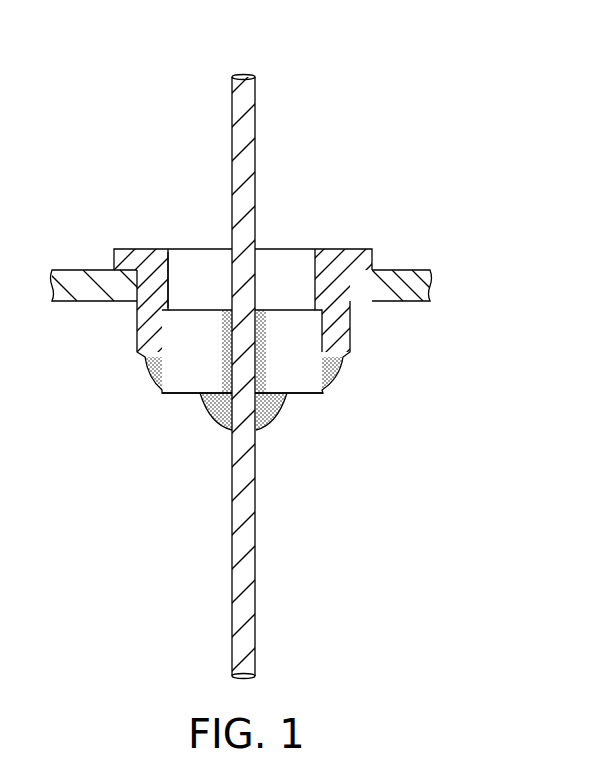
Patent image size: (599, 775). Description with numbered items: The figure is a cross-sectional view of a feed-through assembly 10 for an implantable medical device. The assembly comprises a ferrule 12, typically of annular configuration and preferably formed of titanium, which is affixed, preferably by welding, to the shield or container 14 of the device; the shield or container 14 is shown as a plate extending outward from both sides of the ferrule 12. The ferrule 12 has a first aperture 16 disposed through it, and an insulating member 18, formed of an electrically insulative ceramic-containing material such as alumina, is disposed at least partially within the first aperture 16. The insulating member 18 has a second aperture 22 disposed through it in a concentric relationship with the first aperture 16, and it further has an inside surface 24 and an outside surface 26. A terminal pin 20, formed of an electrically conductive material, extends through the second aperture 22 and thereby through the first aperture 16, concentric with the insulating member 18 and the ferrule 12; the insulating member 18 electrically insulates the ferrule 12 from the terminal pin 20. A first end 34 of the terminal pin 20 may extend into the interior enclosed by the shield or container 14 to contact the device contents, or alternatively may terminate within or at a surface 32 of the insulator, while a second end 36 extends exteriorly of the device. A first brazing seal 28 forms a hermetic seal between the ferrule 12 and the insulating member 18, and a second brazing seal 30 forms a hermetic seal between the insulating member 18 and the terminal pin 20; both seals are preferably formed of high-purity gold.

The feed-through assembly 10 is at (402, 160).
The ferrule 12 is at (358, 250).
The shield or container 14 is at (438, 288).
The first aperture 16 is at (288, 250).
The insulating member 18 is at (325, 393).
The terminal pin 20 is at (255, 193).
The second aperture 22 is at (217, 280).
The inside surface 24 is at (222, 368).
The outside surface 26 is at (155, 393).
The first brazing seal 28 is at (147, 358).
The second brazing seal 30 is at (273, 413).
The surface 32 is at (298, 395).
The first end 34 is at (248, 538).
The second end 36 is at (255, 102).